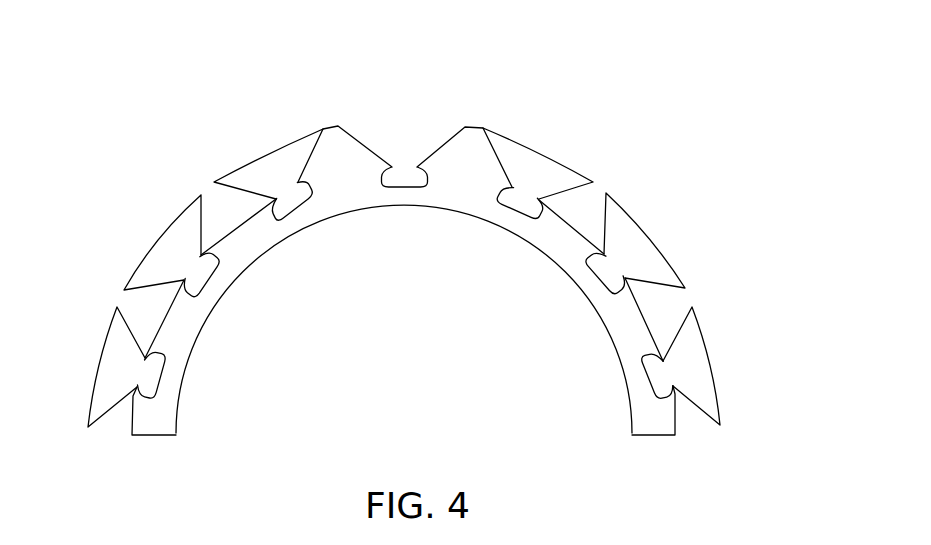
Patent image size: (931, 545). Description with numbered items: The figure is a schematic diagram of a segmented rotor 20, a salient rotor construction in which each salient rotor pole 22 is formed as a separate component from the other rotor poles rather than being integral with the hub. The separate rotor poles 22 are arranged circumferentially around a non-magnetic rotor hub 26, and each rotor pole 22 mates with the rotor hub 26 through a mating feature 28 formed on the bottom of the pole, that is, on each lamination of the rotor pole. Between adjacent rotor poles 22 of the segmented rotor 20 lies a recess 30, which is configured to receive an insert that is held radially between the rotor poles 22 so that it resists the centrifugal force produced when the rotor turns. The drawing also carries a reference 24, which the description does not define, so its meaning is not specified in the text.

The segmented rotor 20 is at (409, 250).
The salient rotor pole 22 is at (465, 127).
The arch segment 24 is at (402, 288).
The non-magnetic rotor hub 26 is at (351, 202).
The mating feature 28 is at (212, 279).
The recess 30 is at (146, 310).